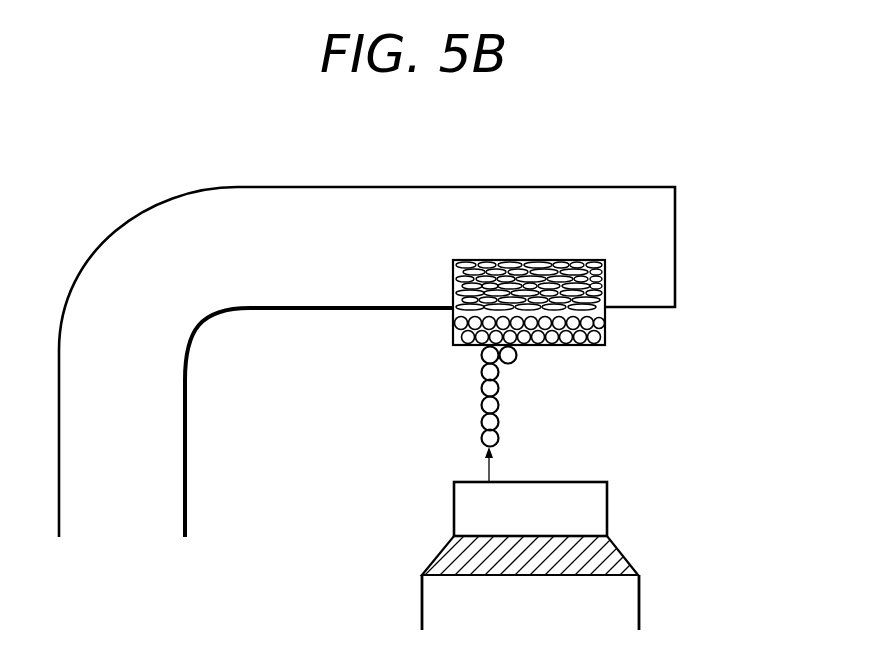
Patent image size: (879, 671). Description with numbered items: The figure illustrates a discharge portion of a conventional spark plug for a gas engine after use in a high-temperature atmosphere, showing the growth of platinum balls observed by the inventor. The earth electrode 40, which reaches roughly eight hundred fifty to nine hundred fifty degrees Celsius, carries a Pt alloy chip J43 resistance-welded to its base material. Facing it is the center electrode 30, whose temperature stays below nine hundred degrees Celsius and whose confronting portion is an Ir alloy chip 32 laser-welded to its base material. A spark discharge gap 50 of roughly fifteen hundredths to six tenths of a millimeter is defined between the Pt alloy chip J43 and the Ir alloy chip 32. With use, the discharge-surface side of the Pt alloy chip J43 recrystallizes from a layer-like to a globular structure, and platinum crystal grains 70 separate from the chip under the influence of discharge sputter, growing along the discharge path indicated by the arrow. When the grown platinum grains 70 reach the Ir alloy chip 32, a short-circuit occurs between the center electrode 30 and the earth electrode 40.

The earth electrode 40 is at (403, 208).
The Pt alloy chip J43 is at (605, 325).
The platinum crystal grains 70 is at (481, 403).
The spark discharge gap 50 is at (580, 405).
The Ir alloy chip 32 is at (578, 513).
The center electrode 30 is at (620, 601).